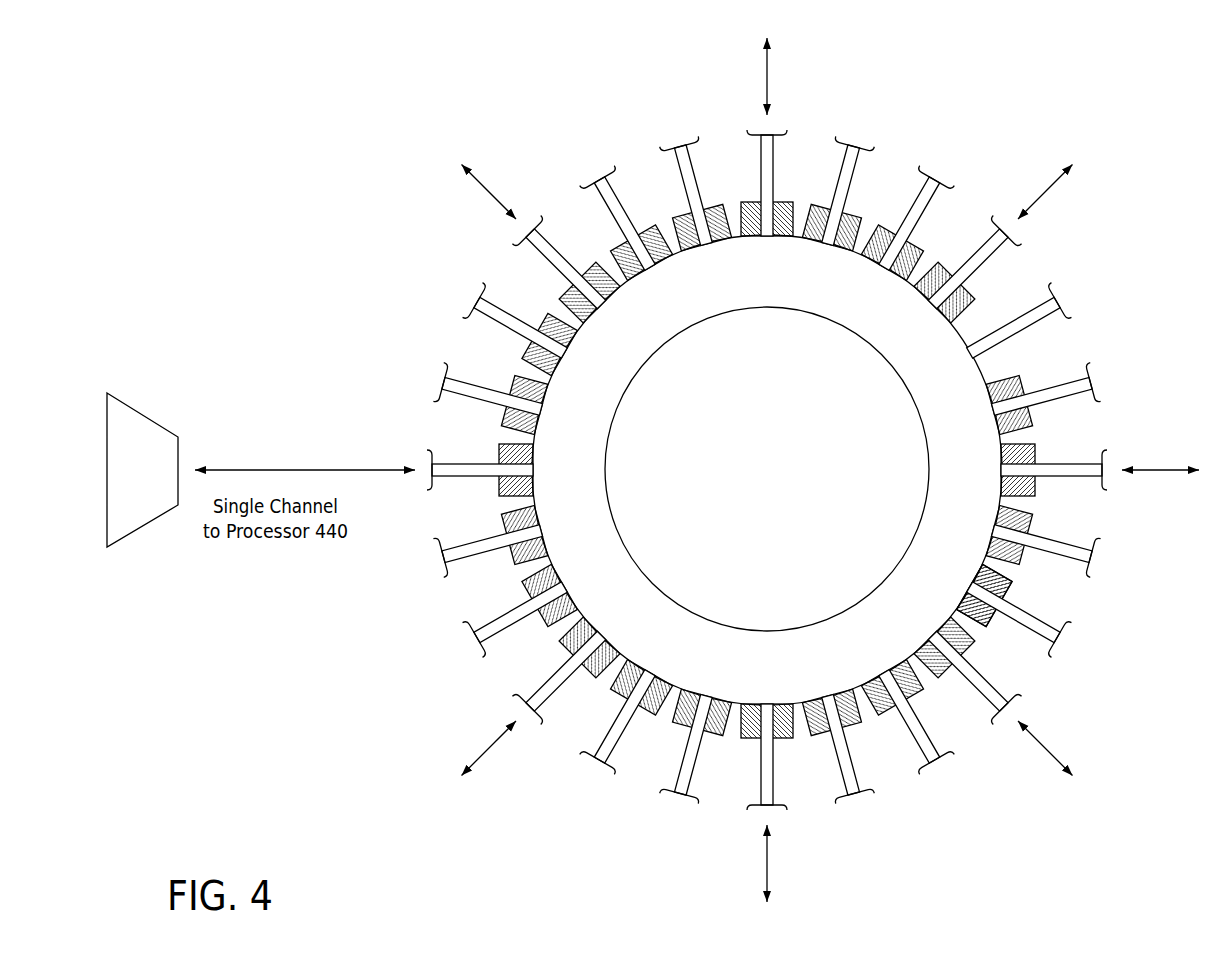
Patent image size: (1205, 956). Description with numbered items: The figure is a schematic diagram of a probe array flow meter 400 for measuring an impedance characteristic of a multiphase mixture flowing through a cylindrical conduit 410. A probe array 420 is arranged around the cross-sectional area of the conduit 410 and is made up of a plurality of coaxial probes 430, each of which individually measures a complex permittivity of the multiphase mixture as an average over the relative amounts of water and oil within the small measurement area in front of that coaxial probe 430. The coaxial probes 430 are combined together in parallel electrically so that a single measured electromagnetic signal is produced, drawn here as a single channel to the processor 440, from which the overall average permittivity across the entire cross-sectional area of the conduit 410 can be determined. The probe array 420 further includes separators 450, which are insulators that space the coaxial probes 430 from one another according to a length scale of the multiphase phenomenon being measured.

The probe array flow meter 400 is at (298, 175).
The conduit 410 is at (992, 252).
The probe array 420 is at (460, 333).
The coaxial probe 430 is at (992, 252).
The processor 440 is at (149, 418).
The separator 450 is at (1007, 585).